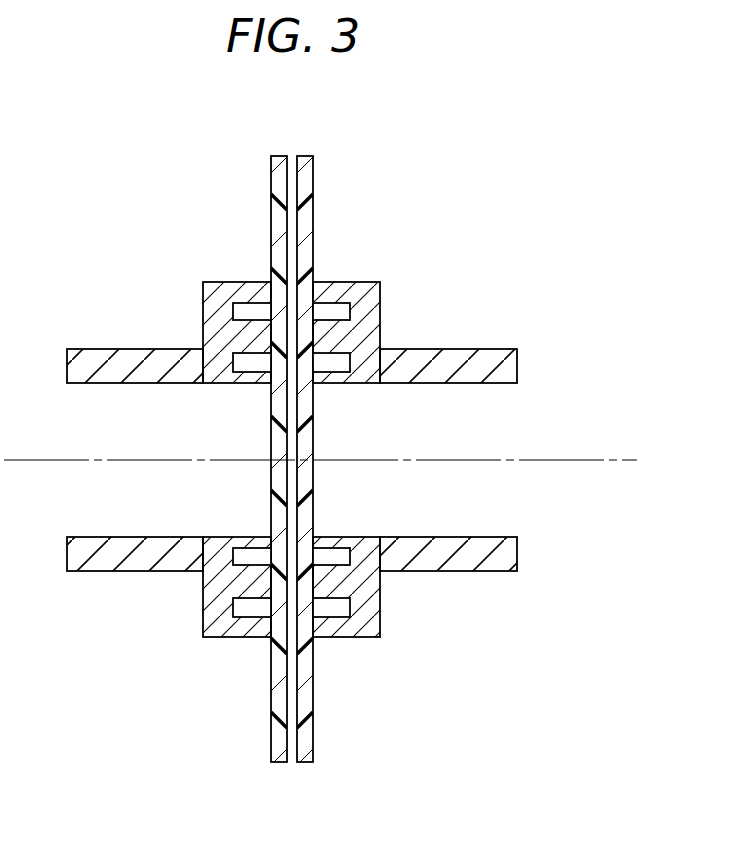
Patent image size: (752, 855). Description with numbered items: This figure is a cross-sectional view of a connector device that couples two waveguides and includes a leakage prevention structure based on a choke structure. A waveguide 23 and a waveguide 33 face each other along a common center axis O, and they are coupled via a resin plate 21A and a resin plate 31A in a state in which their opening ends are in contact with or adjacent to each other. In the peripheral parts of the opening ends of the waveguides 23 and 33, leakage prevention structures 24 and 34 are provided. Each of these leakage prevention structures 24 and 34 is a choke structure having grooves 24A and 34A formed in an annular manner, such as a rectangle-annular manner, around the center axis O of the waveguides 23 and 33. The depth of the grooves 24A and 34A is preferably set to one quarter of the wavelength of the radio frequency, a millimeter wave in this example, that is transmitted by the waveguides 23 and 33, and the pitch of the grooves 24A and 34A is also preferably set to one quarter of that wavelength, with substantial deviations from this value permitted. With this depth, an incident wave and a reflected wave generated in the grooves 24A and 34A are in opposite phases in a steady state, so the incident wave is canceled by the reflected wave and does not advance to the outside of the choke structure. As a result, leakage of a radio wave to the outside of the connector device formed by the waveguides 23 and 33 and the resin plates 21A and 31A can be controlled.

The resin plate 21A is at (272, 158).
The resin plate 31A is at (313, 762).
The waveguide 23 is at (108, 356).
The waveguide 33 is at (480, 356).
The leakage prevention structure 24 is at (203, 282).
The grooves 24A is at (240, 608).
The leakage prevention structure 34 is at (380, 282).
The grooves 34A is at (342, 609).
The center axis O is at (609, 461).